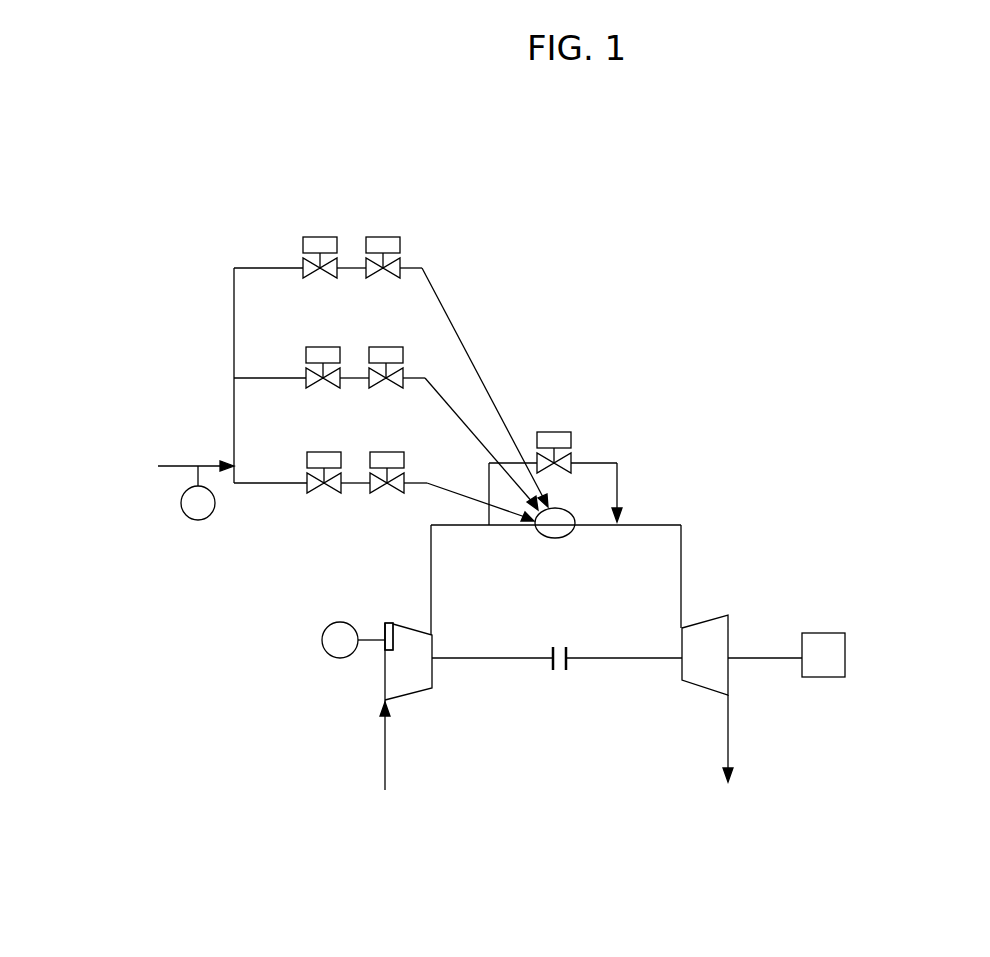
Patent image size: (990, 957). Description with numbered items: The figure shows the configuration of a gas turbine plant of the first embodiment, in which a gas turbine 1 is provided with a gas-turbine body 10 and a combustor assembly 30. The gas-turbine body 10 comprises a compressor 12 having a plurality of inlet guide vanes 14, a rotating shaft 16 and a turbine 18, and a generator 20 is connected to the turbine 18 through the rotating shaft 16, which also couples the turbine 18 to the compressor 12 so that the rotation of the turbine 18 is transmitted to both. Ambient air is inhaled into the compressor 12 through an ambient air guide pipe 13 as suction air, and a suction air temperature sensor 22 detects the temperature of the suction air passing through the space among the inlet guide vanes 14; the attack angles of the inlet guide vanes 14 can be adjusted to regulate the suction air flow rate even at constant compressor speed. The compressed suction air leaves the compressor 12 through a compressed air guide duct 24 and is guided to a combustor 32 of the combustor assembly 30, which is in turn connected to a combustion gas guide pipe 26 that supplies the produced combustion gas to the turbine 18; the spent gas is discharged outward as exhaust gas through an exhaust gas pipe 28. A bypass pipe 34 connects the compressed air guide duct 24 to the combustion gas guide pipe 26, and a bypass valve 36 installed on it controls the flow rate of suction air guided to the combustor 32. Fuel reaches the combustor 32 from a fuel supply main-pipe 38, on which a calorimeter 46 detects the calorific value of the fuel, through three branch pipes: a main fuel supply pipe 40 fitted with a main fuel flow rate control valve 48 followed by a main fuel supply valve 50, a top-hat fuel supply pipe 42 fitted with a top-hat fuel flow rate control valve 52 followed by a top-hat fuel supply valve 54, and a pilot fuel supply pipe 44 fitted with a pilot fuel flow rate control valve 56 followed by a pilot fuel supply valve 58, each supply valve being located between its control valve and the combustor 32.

The gas turbine 1 is at (762, 214).
The gas-turbine body 10 is at (572, 775).
The compressor 12 is at (407, 695).
The ambient air guide pipe 13 is at (385, 765).
The inlet guide vanes 14 is at (383, 650).
The rotating shaft 16 is at (618, 660).
The turbine 18 is at (730, 680).
The generator 20 is at (825, 633).
The suction air temperature sensor 22 is at (322, 640).
The compressed air guide duct 24 is at (431, 598).
The combustion gas guide pipe 26 is at (683, 545).
The exhaust gas pipe 28 is at (731, 745).
The combustor assembly 30 is at (777, 375).
The combustor 32 is at (550, 540).
The bypass pipe 34 is at (617, 478).
The bypass valve 36 is at (565, 433).
The fuel supply main-pipe 38 is at (210, 464).
The main fuel supply pipe 40 is at (238, 268).
The top-hat fuel supply pipe 42 is at (258, 378).
The pilot fuel supply pipe 44 is at (262, 483).
The calorimeter 46 is at (181, 503).
The main fuel flow rate control valve 48 is at (328, 237).
The main fuel supply valve 50 is at (388, 237).
The top-hat fuel flow rate control valve 52 is at (322, 346).
The top-hat fuel supply valve 54 is at (385, 346).
The pilot fuel flow rate control valve 56 is at (322, 453).
The pilot fuel supply valve 58 is at (388, 493).